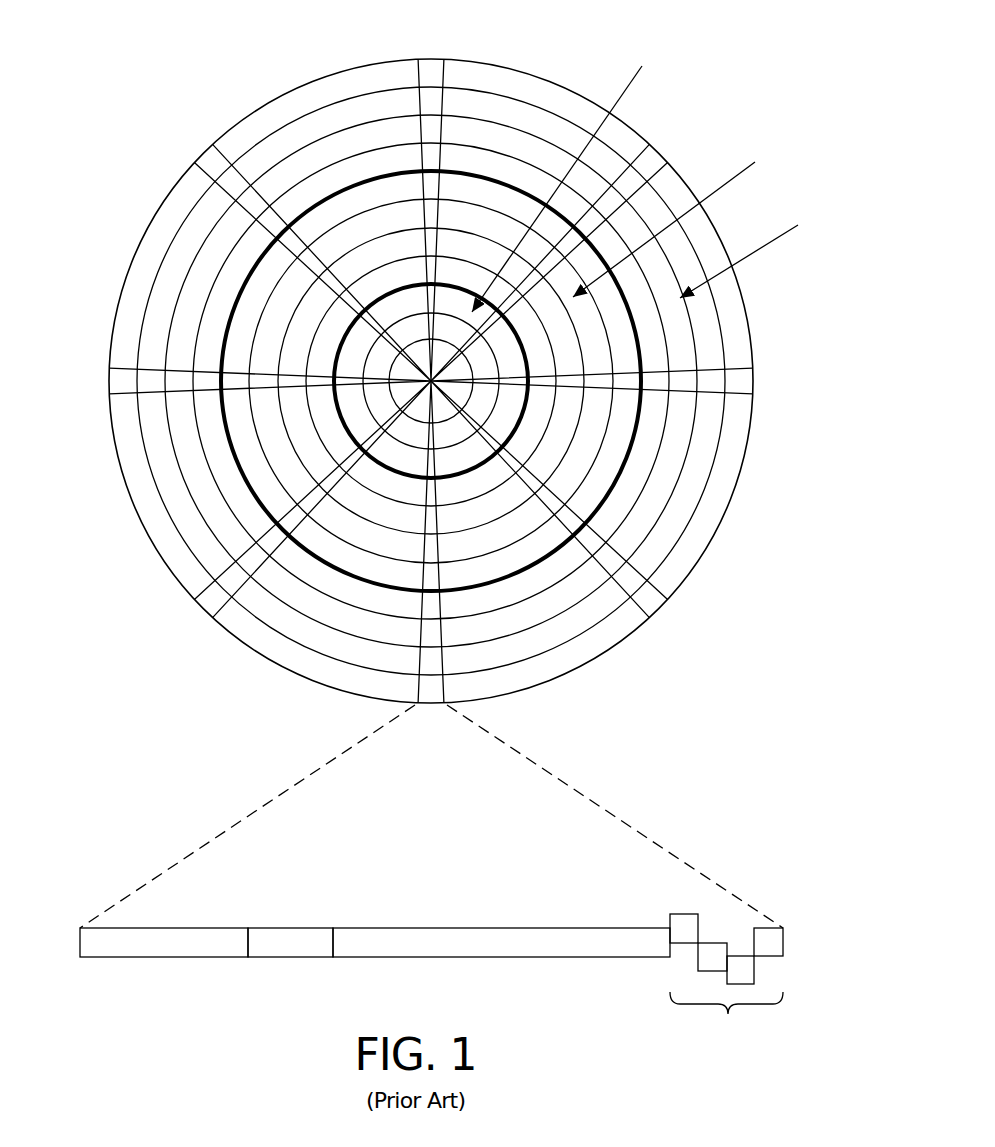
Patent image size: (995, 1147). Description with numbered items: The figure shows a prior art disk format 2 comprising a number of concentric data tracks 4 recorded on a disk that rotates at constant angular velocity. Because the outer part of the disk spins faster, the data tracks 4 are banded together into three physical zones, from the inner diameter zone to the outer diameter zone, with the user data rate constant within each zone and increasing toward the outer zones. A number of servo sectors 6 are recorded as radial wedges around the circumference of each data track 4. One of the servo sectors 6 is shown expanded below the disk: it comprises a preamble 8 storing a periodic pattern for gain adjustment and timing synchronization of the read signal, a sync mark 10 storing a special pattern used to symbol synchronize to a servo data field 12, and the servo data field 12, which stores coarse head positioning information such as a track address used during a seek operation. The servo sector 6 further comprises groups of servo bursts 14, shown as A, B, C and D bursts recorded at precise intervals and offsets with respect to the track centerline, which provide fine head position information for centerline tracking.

The disk format 2 is at (194, 61).
The data tracks 4 is at (540, 122).
The servo sectors 6 is at (431, 391).
The preamble 8 is at (145, 958).
The sync mark 10 is at (288, 958).
The servo data field 12 is at (490, 958).
The servo bursts 14 is at (659, 896).